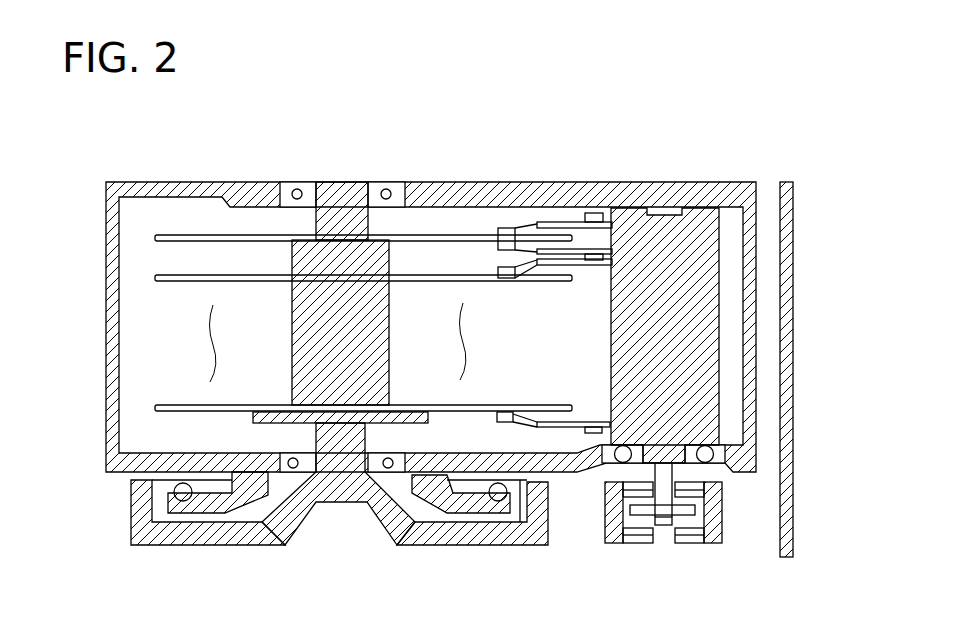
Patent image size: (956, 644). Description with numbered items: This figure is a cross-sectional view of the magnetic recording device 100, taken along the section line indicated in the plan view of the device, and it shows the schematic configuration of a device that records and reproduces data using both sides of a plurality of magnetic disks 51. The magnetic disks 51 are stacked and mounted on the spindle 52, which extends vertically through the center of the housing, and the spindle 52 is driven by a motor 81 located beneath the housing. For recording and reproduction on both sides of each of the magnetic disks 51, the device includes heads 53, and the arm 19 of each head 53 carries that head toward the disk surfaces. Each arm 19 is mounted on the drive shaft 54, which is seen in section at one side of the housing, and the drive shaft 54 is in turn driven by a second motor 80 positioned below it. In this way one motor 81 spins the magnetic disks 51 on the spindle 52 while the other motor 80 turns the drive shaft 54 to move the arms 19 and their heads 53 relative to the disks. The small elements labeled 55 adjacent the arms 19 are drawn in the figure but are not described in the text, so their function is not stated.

The magnetic recording device 100 is at (392, 152).
The magnetic disk 51 is at (188, 235).
The head 53 is at (510, 226).
The arm 19 is at (558, 221).
The spacer blocks 55 is at (596, 212).
The drive shaft 54 is at (668, 240).
The spindle 52 is at (343, 490).
The motor 81 is at (452, 545).
The motor 80 is at (612, 545).